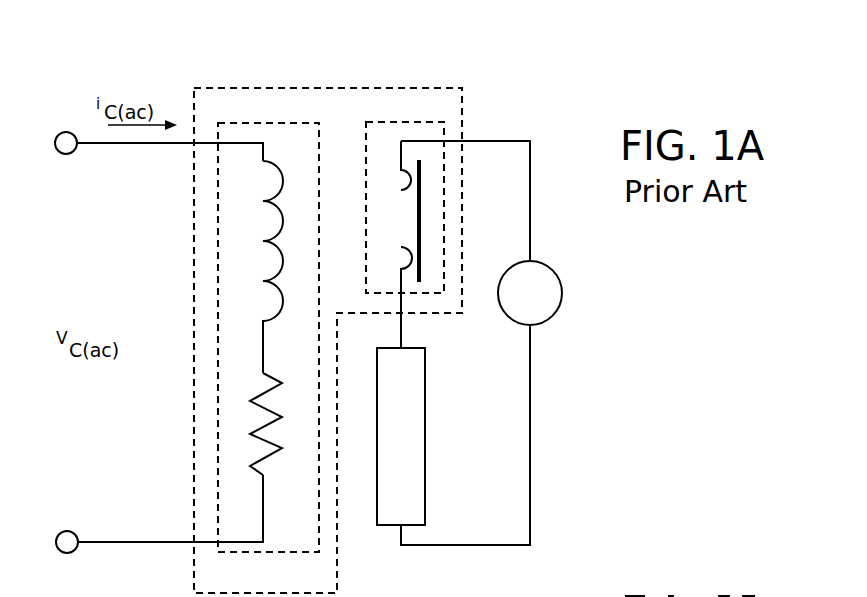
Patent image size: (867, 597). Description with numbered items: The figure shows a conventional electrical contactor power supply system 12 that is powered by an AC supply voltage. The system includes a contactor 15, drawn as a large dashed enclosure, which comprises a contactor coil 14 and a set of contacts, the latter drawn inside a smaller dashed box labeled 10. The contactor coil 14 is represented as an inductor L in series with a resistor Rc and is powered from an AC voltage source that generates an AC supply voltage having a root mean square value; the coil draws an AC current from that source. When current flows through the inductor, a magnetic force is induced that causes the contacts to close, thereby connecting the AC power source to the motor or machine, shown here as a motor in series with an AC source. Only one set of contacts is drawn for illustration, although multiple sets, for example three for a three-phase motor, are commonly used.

The switch 10 is at (410, 120).
The electrical contactor power supply system 12 is at (552, 76).
The contactor coil 14 is at (254, 122).
The contactor 15 is at (305, 87).